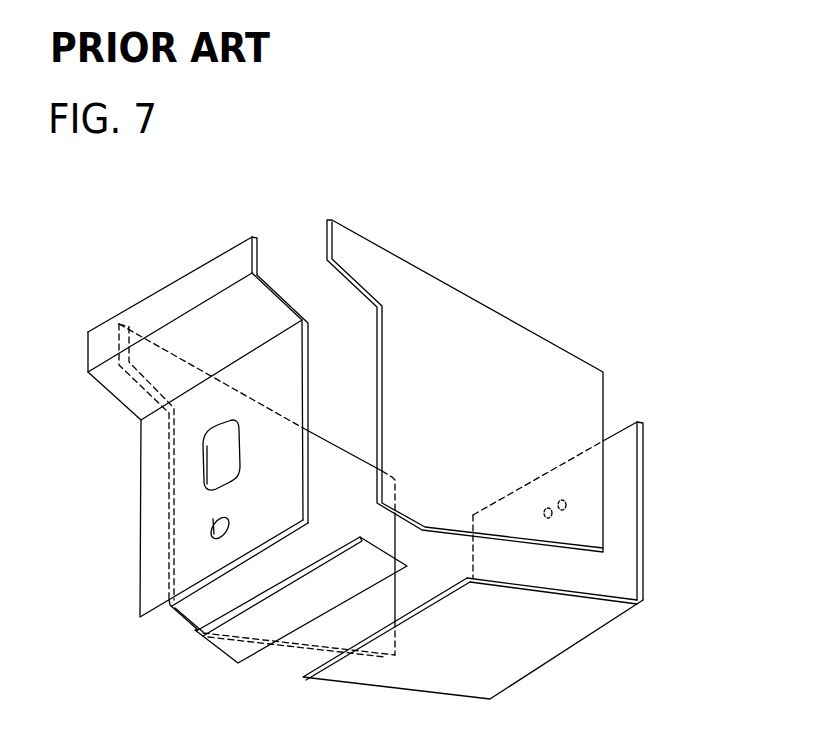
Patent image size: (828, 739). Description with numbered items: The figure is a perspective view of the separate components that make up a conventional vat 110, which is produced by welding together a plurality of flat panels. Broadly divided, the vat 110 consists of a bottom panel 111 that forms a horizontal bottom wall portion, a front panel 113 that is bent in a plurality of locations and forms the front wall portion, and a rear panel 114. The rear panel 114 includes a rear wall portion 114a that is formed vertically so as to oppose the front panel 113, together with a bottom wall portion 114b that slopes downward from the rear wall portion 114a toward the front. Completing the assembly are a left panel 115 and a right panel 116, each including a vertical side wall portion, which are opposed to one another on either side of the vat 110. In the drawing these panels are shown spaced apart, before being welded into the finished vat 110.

The vat 110 is at (452, 243).
The bottom panel 111 is at (242, 648).
The front panel 113 is at (217, 280).
The rear panel 114 is at (648, 458).
The rear wall portion 114a is at (620, 543).
The bottom wall portion 114b is at (438, 663).
The left panel 115 is at (343, 447).
The right panel 116 is at (485, 332).